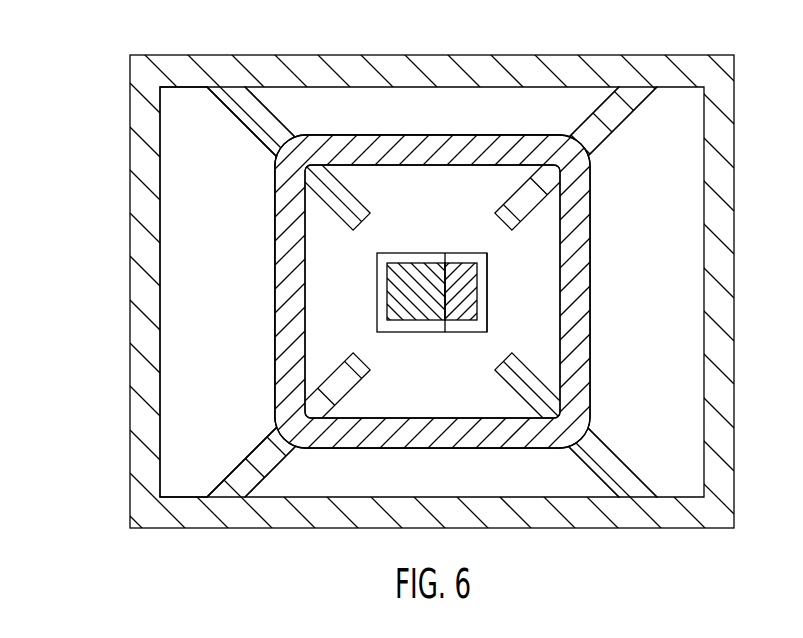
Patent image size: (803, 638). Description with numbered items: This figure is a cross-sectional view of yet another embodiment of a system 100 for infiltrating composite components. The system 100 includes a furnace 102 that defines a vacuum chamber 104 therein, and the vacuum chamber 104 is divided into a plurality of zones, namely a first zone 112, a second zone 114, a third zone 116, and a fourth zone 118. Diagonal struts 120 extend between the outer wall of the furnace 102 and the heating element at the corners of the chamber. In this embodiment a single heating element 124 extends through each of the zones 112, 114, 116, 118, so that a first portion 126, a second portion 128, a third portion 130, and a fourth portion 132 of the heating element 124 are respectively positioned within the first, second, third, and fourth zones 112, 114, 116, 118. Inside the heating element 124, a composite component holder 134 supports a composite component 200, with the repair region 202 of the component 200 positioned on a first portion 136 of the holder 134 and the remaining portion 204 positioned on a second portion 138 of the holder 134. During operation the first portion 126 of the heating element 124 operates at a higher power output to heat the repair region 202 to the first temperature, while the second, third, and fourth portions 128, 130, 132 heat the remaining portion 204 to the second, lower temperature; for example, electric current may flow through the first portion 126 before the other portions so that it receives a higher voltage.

The system for infiltrating composite components 100 is at (383, 319).
The furnace 102 is at (273, 55).
The vacuum chamber 104 is at (233, 237).
The first zone 112 is at (663, 298).
The second zone 114 is at (452, 124).
The third zone 116 is at (233, 367).
The fourth zone 118 is at (453, 486).
The support strut 120 is at (233, 113).
The heating element 124 is at (436, 319).
The first portion of the heating element 126 is at (590, 368).
The second portion of the heating element 128 is at (490, 135).
The third portion of the heating element 130 is at (275, 305).
The fourth portion of the heating element 132 is at (482, 448).
The composite component holder 134 is at (473, 242).
The first portion of the composite component holder 136 is at (487, 288).
The second portion of the composite component holder 138 is at (390, 332).
The composite component 200 is at (424, 311).
The repair region 202 is at (457, 263).
The remaining portion 204 is at (422, 320).